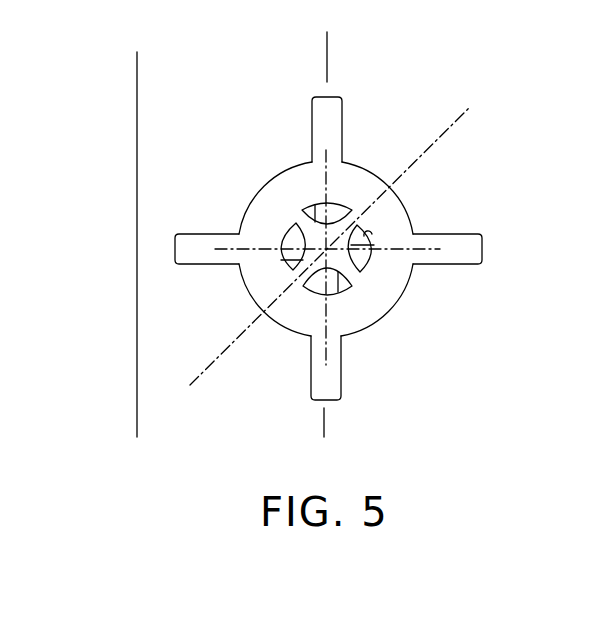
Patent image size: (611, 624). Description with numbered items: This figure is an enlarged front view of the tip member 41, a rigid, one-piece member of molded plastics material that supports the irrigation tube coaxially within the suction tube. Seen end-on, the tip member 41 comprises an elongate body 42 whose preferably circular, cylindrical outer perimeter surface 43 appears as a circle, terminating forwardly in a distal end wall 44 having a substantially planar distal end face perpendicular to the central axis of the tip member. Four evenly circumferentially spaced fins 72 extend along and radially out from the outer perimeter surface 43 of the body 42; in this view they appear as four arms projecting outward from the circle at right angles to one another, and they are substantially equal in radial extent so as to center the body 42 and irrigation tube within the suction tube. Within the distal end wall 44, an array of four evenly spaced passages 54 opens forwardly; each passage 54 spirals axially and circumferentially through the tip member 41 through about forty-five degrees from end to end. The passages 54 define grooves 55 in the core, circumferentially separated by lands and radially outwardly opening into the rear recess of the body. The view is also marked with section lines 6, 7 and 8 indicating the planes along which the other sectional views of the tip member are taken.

The tip member 41 is at (366, 219).
The elongate body 42 is at (381, 326).
The outer perimeter surface 43 is at (405, 296).
The distal end wall 44 is at (393, 276).
The passages 54 is at (368, 230).
The grooves 55 is at (376, 243).
The fins 72 is at (333, 97).
The section line 6- 6 is at (370, 32).
The section line 7- 7 is at (469, 108).
The section line 8- 8 is at (175, 52).